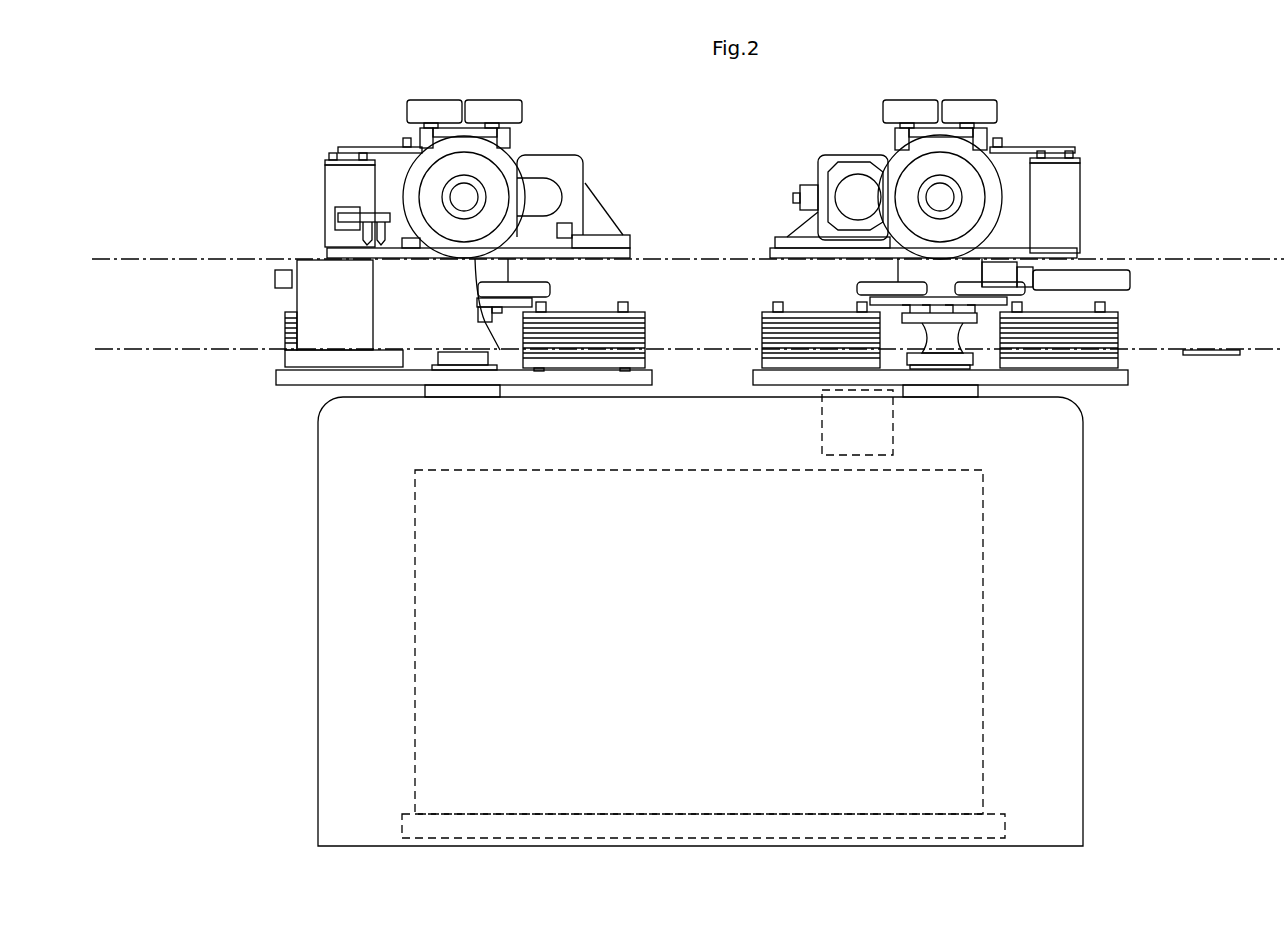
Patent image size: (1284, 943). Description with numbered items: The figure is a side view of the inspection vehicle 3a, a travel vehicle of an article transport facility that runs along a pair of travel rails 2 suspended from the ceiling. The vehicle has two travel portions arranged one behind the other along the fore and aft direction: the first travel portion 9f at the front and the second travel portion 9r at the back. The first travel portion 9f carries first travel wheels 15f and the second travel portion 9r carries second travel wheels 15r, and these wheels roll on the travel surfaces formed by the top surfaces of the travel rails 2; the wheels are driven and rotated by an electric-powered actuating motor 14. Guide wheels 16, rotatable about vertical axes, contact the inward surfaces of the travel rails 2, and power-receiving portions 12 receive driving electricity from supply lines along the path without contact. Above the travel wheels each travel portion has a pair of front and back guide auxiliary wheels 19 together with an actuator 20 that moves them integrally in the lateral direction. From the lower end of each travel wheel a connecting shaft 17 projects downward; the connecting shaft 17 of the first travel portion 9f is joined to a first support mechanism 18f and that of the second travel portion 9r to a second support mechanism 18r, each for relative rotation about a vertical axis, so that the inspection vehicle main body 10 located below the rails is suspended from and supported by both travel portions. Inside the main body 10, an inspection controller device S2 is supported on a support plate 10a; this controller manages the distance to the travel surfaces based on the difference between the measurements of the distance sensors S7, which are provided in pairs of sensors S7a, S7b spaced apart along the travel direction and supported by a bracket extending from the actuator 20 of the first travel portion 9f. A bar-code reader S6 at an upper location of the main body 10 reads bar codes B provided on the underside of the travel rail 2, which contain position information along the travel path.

The travel rail 2 is at (327, 335).
The inspection vehicle 3a is at (1107, 687).
The first travel portion 9f is at (538, 88).
The second travel portion 9r is at (1012, 88).
The inspection vehicle main body 10 is at (1083, 625).
The support plate 10a is at (402, 822).
The power-receiving portion 12 is at (290, 330).
The actuating motor 14 is at (553, 197).
The first travel wheel 15f is at (507, 178).
The second travel wheel 15r is at (990, 172).
The guide wheel 16 is at (548, 289).
The connecting shaft 17 is at (488, 318).
The first support mechanism 18f is at (470, 397).
The second support mechanism 18r is at (938, 400).
The guide auxiliary wheel 19 is at (482, 103).
The actuator 20 is at (325, 190).
The bar code B is at (1225, 357).
The inspection controller device S2 is at (425, 643).
The bar-code reader S6 is at (845, 398).
The distance sensor S7 is at (237, 183).
The distance sensor S7a is at (366, 236).
The distance sensor S7b is at (370, 212).